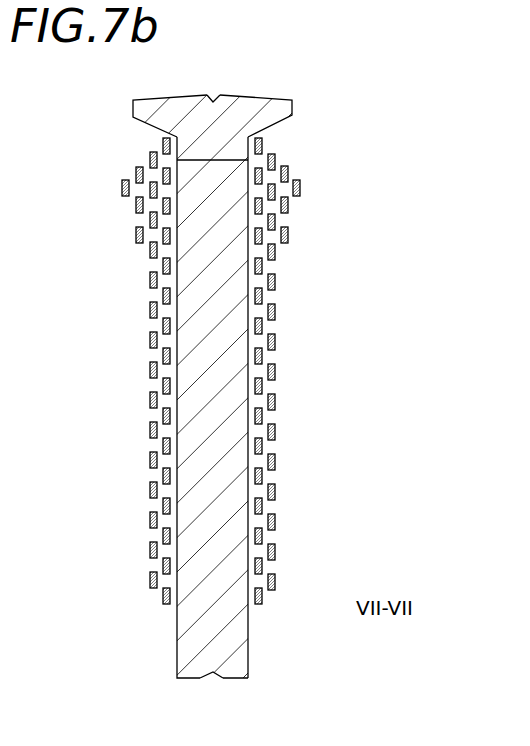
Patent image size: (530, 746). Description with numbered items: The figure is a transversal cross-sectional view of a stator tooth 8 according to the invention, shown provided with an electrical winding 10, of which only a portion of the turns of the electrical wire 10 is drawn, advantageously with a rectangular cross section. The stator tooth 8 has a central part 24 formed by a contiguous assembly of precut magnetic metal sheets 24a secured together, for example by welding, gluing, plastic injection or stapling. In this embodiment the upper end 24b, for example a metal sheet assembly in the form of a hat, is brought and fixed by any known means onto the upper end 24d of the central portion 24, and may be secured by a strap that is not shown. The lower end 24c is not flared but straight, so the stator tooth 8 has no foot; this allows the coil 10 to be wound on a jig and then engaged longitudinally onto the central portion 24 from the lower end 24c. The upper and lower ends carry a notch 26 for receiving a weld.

The stator tooth 8 is at (122, 397).
The electrical winding 10 is at (276, 253).
The central part 24 is at (176, 621).
The precut magnetic metal sheets 24a is at (220, 512).
The upper end 24b is at (291, 107).
The lower end 24c is at (250, 670).
The upper end of the central portion 24d is at (220, 161).
The notch 26 is at (212, 99).